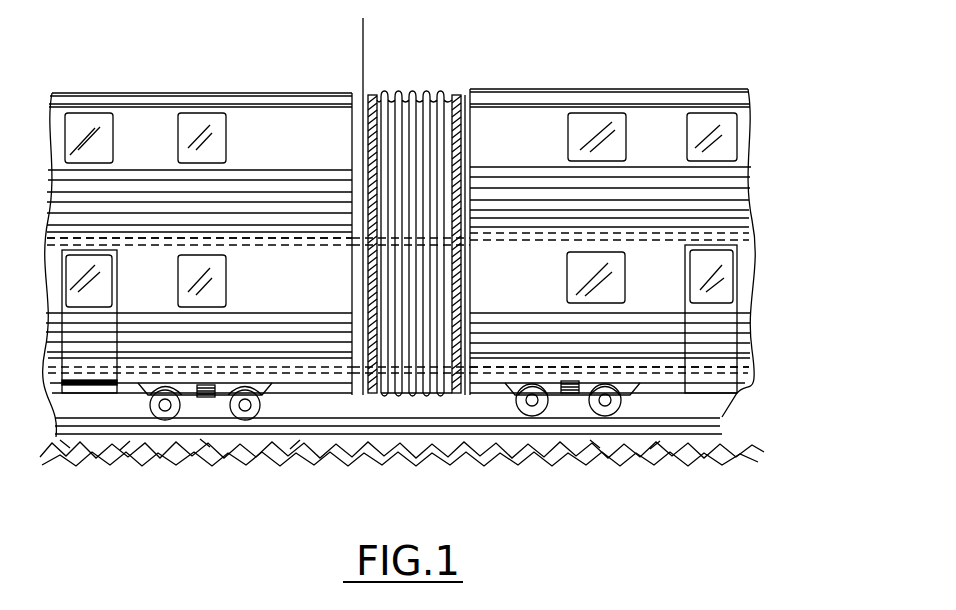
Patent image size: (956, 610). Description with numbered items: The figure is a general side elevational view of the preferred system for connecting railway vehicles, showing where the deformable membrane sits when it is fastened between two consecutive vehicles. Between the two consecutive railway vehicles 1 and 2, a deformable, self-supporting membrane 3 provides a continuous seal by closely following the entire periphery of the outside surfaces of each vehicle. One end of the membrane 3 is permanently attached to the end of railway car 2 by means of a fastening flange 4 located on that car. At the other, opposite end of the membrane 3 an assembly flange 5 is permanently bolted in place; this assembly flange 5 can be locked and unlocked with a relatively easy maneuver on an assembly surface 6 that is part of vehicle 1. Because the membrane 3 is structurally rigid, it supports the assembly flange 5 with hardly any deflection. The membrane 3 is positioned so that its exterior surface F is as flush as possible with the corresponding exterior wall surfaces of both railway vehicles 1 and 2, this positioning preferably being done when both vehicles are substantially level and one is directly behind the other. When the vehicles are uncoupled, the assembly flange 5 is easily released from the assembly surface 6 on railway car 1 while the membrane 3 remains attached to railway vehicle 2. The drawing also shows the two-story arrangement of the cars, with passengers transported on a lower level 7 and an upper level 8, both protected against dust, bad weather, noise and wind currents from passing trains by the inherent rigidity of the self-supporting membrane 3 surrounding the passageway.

The railway vehicle 1 is at (322, 113).
The railway vehicle 2 is at (491, 127).
The deformable self-supporting membrane 3 is at (414, 96).
The fastening flange 4 is at (450, 396).
The assembly flange 5 is at (370, 396).
The assembly surface 6 is at (362, 35).
The lower level 7 is at (483, 366).
The upper level 8 is at (343, 240).
The exterior surface F is at (390, 396).